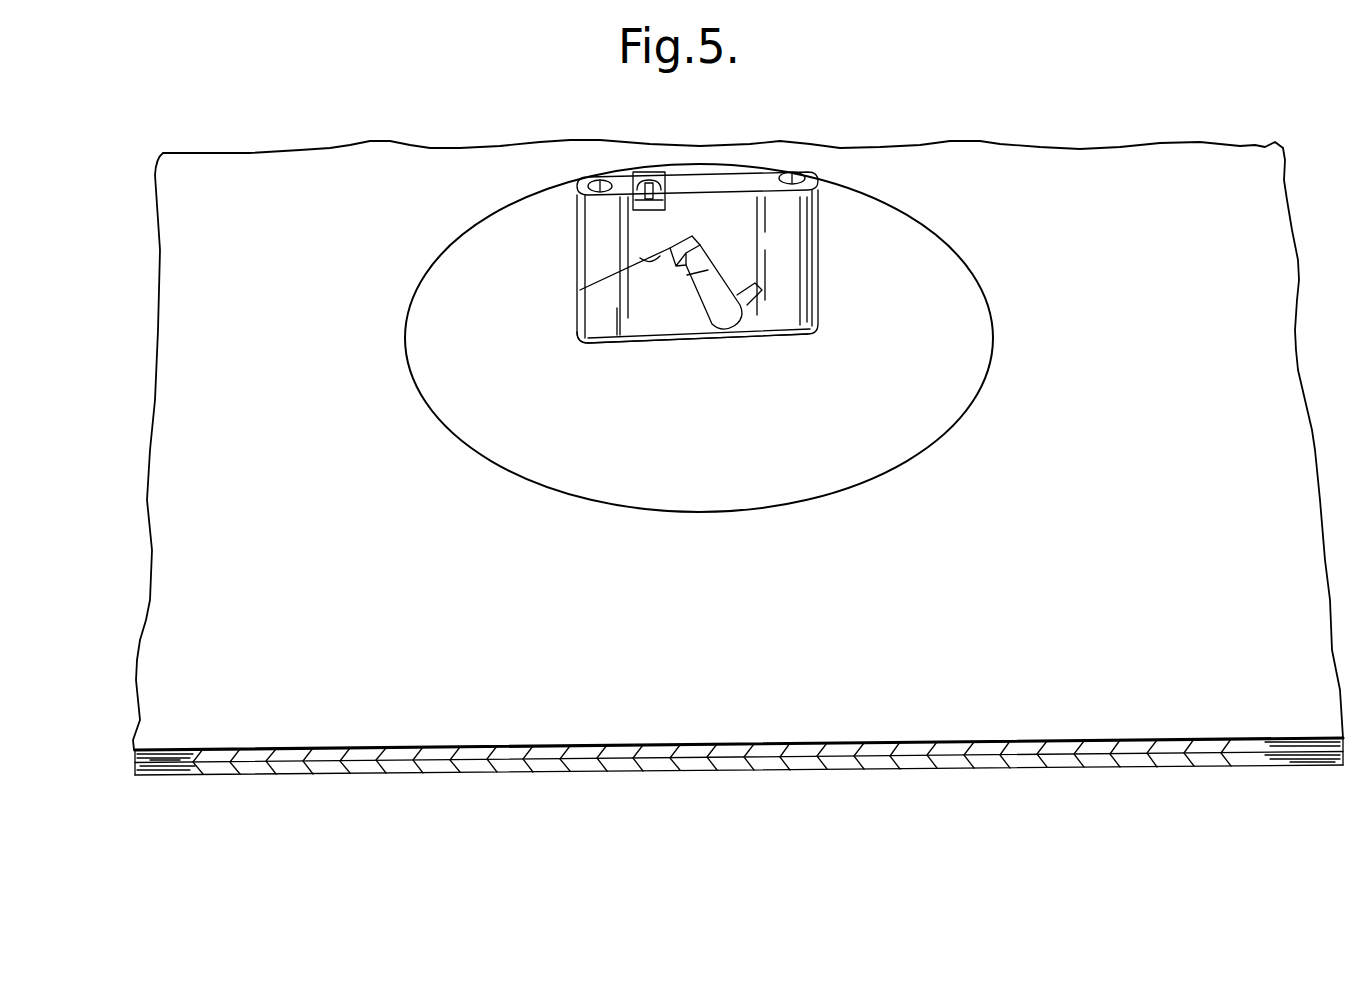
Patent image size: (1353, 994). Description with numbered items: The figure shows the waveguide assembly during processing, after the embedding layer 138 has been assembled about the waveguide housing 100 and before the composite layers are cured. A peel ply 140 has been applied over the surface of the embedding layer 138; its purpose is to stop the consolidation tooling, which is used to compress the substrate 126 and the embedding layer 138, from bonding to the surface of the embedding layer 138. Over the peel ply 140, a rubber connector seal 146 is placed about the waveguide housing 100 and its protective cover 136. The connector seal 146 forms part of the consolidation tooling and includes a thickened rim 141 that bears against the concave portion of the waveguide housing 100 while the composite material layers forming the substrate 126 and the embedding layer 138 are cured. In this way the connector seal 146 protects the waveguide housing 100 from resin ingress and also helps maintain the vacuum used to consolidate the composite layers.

The waveguide housing 100 is at (758, 287).
The protective cover 136 is at (788, 223).
The thickened rim 141 is at (601, 347).
The connector seal 146 is at (887, 445).
The peel ply 140 is at (755, 643).
The embedding layer 138 is at (1040, 760).
The substrate 126 is at (1168, 758).